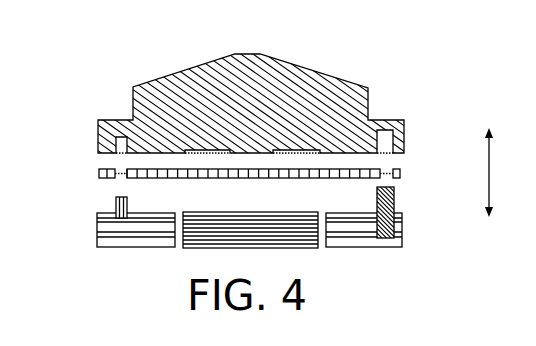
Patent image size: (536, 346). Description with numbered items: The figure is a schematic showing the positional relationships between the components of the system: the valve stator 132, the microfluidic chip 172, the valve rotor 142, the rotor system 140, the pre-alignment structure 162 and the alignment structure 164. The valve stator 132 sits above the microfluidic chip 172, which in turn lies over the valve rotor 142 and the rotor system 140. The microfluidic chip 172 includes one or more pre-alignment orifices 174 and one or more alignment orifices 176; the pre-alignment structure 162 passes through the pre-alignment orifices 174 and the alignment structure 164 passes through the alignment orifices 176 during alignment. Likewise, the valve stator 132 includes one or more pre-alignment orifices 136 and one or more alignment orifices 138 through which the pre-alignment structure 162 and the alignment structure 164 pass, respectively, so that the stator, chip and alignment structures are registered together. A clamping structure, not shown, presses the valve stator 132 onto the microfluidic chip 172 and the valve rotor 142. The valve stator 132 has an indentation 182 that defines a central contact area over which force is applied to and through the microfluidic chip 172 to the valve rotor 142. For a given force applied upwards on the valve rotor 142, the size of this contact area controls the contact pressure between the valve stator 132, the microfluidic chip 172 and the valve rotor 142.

The valve stator 132 is at (262, 52).
The pre-alignment orifice 136 is at (387, 128).
The alignment orifice 138 is at (120, 133).
The indentation 182 is at (293, 140).
The pre-alignment orifice 174 is at (388, 172).
The alignment orifice 176 is at (116, 169).
The microfluidic chip 172 is at (97, 174).
The alignment structure 164 is at (115, 200).
The valve rotor 142 is at (255, 212).
The rotor system 140 is at (377, 247).
The pre-alignment structure 162 is at (394, 212).